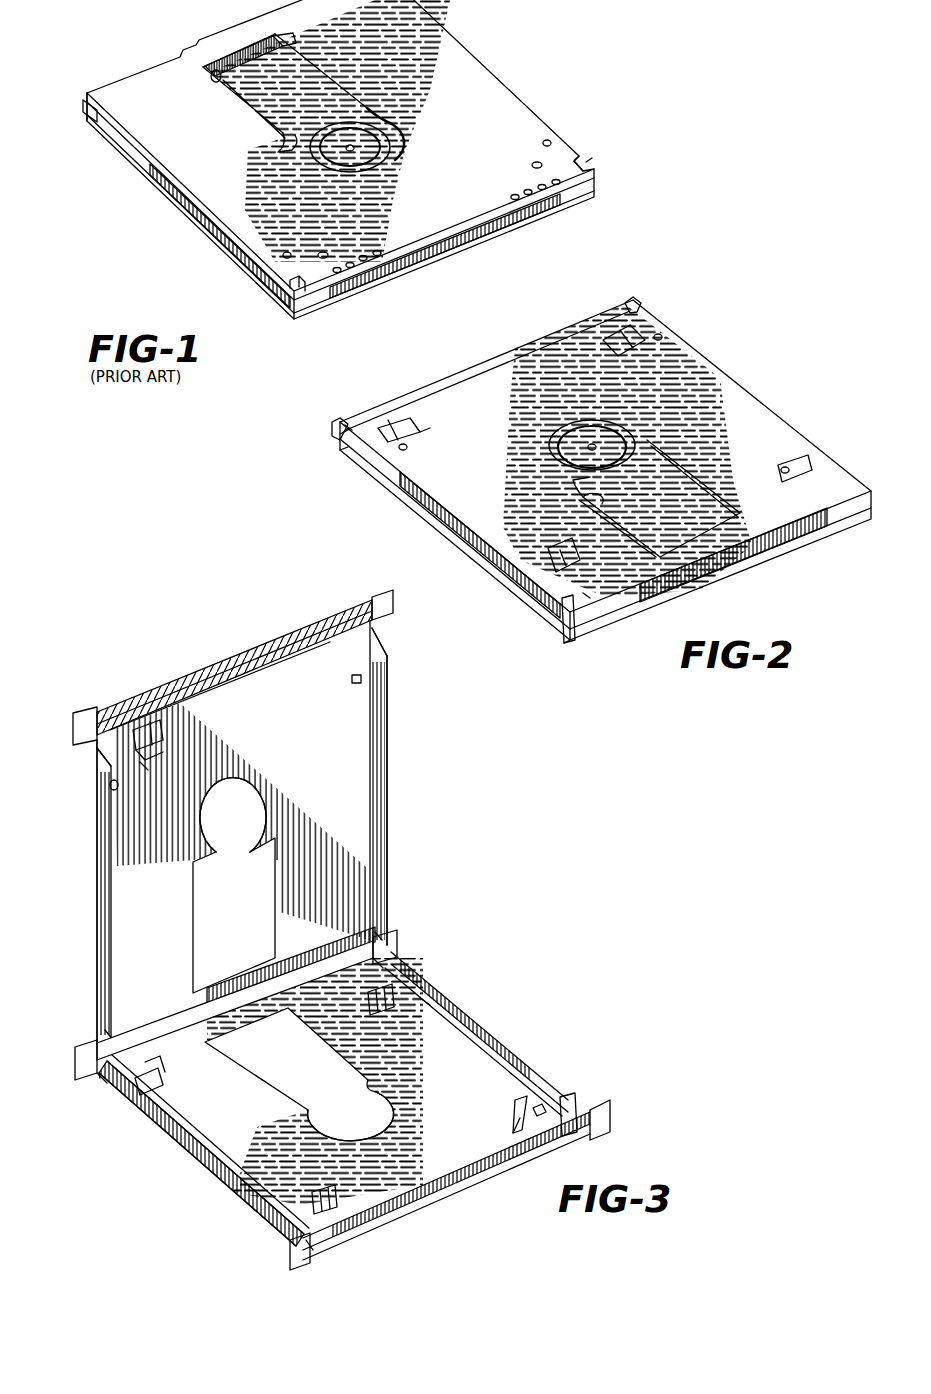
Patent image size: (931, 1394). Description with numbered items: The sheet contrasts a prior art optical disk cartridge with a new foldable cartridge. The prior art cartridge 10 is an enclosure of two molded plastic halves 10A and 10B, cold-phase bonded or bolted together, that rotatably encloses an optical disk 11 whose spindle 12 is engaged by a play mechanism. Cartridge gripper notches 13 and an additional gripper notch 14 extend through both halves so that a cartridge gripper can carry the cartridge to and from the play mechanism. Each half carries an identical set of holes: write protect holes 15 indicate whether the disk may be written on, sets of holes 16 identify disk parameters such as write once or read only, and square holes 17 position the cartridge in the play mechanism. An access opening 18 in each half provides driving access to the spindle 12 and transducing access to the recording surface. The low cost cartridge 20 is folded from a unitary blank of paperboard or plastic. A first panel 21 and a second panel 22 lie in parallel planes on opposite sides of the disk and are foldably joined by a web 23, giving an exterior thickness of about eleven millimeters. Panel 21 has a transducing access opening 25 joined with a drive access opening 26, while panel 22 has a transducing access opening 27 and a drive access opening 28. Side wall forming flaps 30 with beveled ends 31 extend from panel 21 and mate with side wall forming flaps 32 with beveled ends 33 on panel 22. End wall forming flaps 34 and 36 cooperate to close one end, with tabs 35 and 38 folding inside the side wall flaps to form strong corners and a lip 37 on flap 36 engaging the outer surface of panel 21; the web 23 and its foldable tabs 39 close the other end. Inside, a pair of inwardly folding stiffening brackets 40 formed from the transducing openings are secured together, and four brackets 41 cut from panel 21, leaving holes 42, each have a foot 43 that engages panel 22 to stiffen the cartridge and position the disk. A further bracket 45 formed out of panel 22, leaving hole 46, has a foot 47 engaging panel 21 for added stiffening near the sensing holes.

In FIG. 1, the prior art cartridge 10 is at (490, 36).
In FIG. 1, the cartridge half 10A is at (152, 162).
In FIG. 1, the cartridge half 10B is at (188, 212).
In FIG. 1, the optical disk 11 is at (332, 88).
In FIG. 2, the optical disk 11 is at (672, 538).
In FIG. 1, the spindle 12 is at (384, 120).
In FIG. 2, the spindle 12 is at (638, 450).
In FIG. 1, the cartridge gripper notches 13 is at (592, 145).
In FIG. 1, the additional gripper notch 14 is at (78, 124).
In FIG. 1, the write protect holes 15 is at (541, 161).
In FIG. 1, the sets of holes 16 is at (498, 192).
In FIG. 1, the square holes 17 is at (544, 142).
In FIG. 2, the square holes 17 is at (664, 337).
In FIG. 3, the square holes 17 is at (362, 680).
In FIG. 1, the access opening 18 is at (211, 78).
In FIG. 2, the low cost cartridge 20 is at (739, 345).
In FIG. 3, the low cost cartridge 20 is at (150, 1166).
In FIG. 2, the first panel 21 is at (495, 382).
In FIG. 3, the first panel 21 is at (478, 1036).
In FIG. 2, the second panel 22 is at (608, 342).
In FIG. 3, the second panel 22 is at (300, 658).
In FIG. 2, the web 23 is at (614, 318).
In FIG. 3, the web 23 is at (115, 1090).
In FIG. 2, the transducing access opening 25 is at (582, 500).
In FIG. 3, the transducing access opening 25 is at (310, 1072).
In FIG. 2, the drive access opening 26 is at (550, 443).
In FIG. 3, the drive access opening 26 is at (362, 1130).
In FIG. 3, the transducing access opening 27 is at (245, 916).
In FIG. 3, the drive access opening 28 is at (245, 832).
In FIG. 2, the side wall forming flaps 30 is at (640, 315).
In FIG. 3, the side wall forming flaps 30 is at (505, 1062).
In FIG. 2, the beveled ends 31 is at (340, 452).
In FIG. 3, the beveled ends 31 is at (398, 958).
In FIG. 3, the side wall forming flaps 32 is at (388, 812).
In FIG. 2, the beveled ends 33 is at (346, 425).
In FIG. 3, the beveled ends 33 is at (380, 630).
In FIG. 3, the end wall forming flap 34 is at (480, 1188).
In FIG. 2, the tabs 35 is at (338, 422).
In FIG. 3, the tabs 35 is at (611, 1118).
In FIG. 3, the end wall forming flap 36 is at (157, 700).
In FIG. 2, the lip 37 is at (545, 345).
In FIG. 3, the lip 37 is at (190, 672).
In FIG. 3, the tabs 38 is at (383, 605).
In FIG. 2, the foldable tabs 39 is at (568, 645).
In FIG. 3, the foldable tabs 39 is at (398, 935).
In FIG. 3, the stiffening brackets 40 is at (300, 966).
In FIG. 2, the brackets 41 is at (778, 466).
In FIG. 3, the brackets 41 is at (385, 1008).
In FIG. 2, the holes 42 is at (624, 352).
In FIG. 3, the holes 42 is at (420, 998).
In FIG. 3, the foot 43 is at (368, 996).
In FIG. 2, the bracket 45 is at (400, 426).
In FIG. 3, the bracket 45 is at (163, 730).
In FIG. 2, the hole 46 is at (428, 438).
In FIG. 3, the hole 46 is at (150, 765).
In FIG. 3, the foot 47 is at (164, 742).